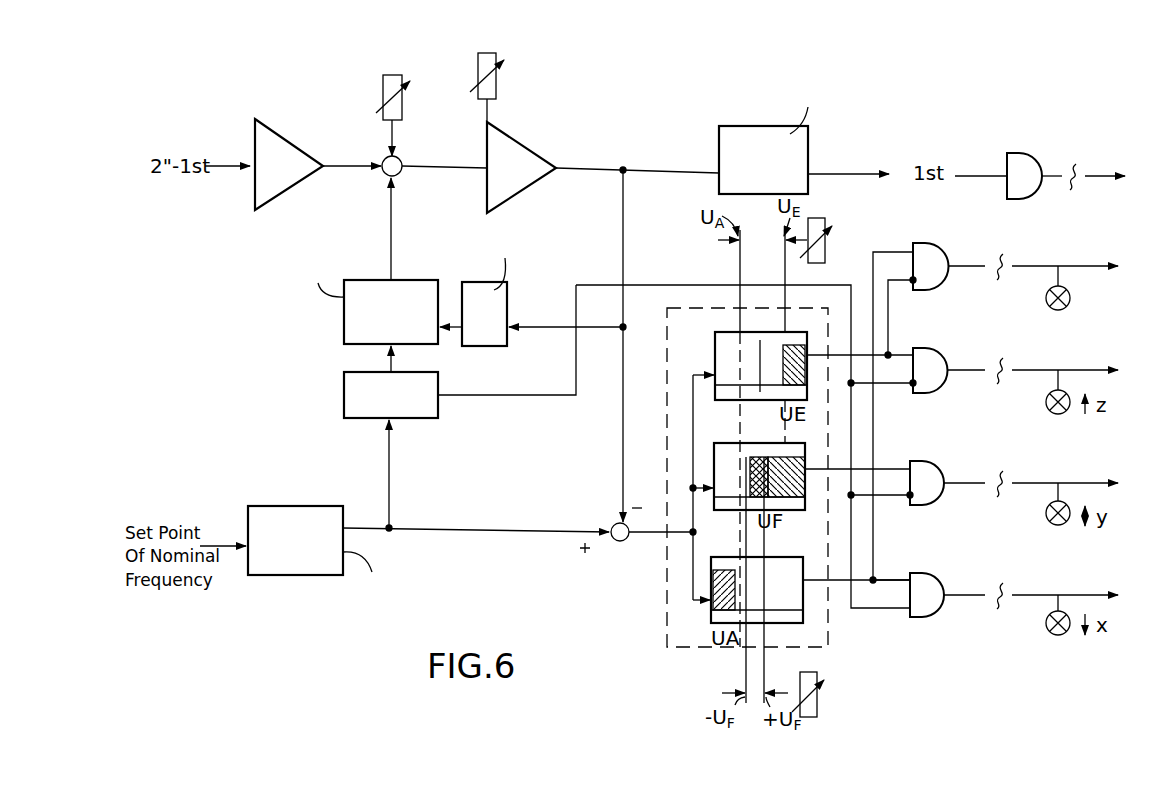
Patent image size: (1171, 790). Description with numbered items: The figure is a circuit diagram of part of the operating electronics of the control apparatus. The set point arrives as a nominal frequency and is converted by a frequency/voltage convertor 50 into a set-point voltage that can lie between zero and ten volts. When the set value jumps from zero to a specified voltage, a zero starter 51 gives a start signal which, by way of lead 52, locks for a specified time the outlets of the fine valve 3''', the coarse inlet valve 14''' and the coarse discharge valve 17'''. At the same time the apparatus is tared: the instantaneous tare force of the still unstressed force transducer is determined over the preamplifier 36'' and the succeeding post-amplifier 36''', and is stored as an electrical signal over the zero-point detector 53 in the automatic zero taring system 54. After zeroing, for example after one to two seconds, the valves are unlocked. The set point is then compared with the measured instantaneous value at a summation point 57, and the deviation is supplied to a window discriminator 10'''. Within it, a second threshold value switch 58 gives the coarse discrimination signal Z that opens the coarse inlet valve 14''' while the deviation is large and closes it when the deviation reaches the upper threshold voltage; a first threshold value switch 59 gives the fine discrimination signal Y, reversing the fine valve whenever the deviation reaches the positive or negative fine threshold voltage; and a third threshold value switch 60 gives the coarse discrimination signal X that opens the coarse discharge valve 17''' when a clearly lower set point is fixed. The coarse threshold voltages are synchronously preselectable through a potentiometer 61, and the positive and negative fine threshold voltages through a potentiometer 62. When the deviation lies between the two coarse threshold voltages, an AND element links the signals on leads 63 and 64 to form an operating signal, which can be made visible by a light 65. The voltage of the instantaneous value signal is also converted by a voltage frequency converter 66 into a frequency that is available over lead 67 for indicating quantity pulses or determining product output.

The preamplifier 36'' is at (332, 142).
The post-amplifier 36''' is at (515, 133).
The voltage frequency converter 66 is at (752, 134).
The lead 67 is at (852, 172).
The potentiometer 61 is at (826, 240).
The lead 52 is at (668, 285).
The second threshold value switch 58 is at (715, 333).
The first threshold value switch 59 is at (722, 443).
The third threshold value switch 60 is at (722, 557).
The window discriminator 10''' is at (722, 477).
The potentiometer 62 is at (822, 697).
The lead 63 is at (875, 436).
The lead 64 is at (888, 322).
The indicator lamp 65 is at (1071, 298).
The coarse inlet valve 14''' is at (1063, 406).
The fine valve 3''' is at (1061, 518).
The coarse discharge valve 17''' is at (1063, 629).
The automatic zero taring system 54 is at (344, 318).
The zero-point detector 53 is at (482, 292).
The zero starter 51 is at (344, 396).
The frequency/voltage convertor 50 is at (290, 506).
The summation point 57 is at (611, 524).